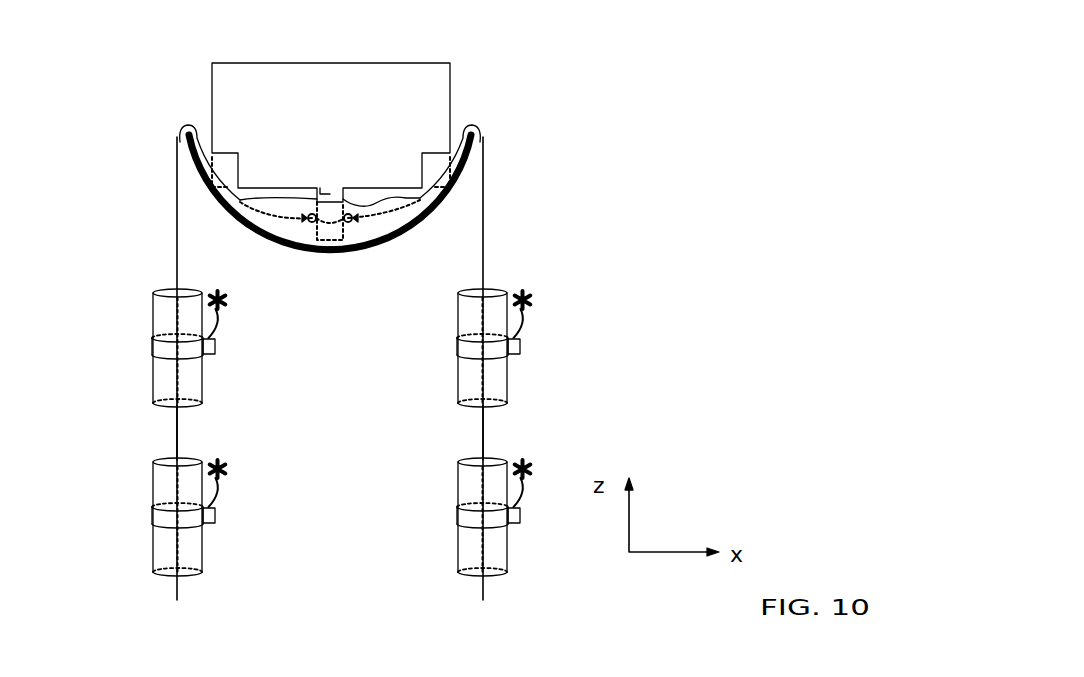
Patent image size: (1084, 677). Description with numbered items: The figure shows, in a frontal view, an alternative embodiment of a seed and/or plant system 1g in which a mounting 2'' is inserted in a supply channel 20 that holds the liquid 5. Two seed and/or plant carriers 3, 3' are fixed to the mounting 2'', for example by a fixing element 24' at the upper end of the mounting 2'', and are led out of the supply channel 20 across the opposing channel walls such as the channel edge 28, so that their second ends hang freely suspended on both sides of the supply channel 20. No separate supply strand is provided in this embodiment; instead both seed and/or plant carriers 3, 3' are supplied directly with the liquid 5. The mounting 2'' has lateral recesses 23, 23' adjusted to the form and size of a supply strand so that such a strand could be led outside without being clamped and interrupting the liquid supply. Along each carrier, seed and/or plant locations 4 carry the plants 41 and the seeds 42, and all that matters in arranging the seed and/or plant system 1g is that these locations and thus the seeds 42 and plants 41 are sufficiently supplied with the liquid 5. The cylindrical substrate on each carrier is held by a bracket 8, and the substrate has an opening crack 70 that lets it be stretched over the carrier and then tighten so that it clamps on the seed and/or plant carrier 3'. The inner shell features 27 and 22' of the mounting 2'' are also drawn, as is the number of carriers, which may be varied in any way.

The seed and/or plant system 1g is at (718, 92).
The mounting 2'' is at (456, 132).
The supply channel 20 is at (477, 145).
The lateral recess 23 is at (152, 162).
The lateral recess 23' is at (577, 161).
The channel wall 28 is at (460, 185).
The fixing element 24' is at (240, 213).
The liquid 5 is at (270, 220).
The sensor 27 is at (292, 232).
The outer wall 22' is at (519, 249).
The seed and/or plant location 4 is at (130, 377).
The plant 41 is at (532, 302).
The seed 42 is at (518, 342).
The seed and/or plant carrier 3 is at (130, 432).
The seed and/or plant carrier 3' is at (628, 434).
The bracket 8 is at (175, 519).
The opening crack 70 is at (177, 546).